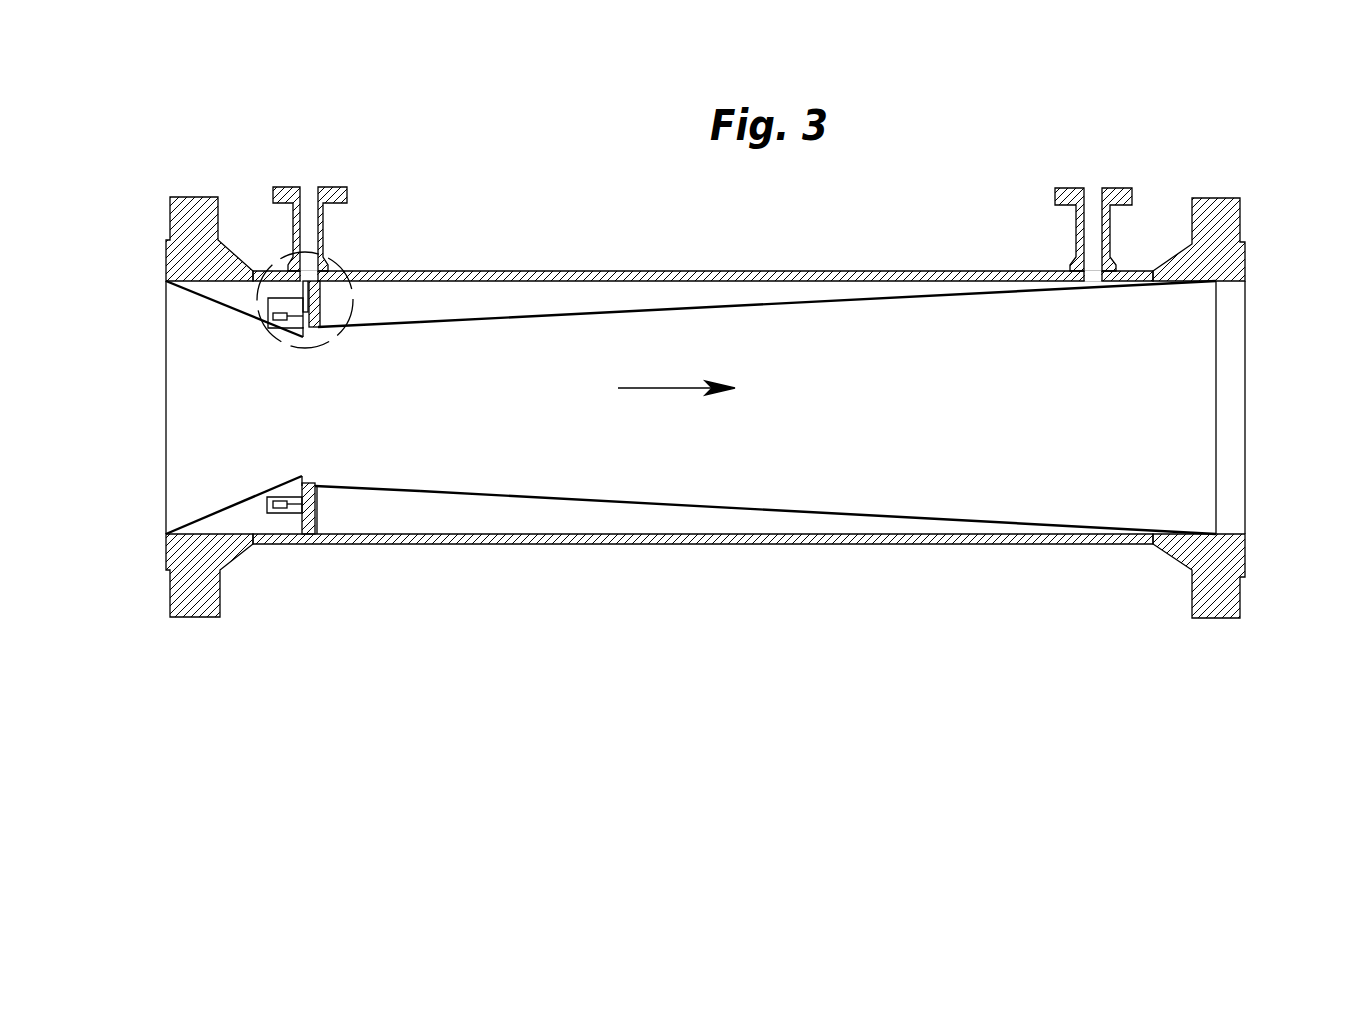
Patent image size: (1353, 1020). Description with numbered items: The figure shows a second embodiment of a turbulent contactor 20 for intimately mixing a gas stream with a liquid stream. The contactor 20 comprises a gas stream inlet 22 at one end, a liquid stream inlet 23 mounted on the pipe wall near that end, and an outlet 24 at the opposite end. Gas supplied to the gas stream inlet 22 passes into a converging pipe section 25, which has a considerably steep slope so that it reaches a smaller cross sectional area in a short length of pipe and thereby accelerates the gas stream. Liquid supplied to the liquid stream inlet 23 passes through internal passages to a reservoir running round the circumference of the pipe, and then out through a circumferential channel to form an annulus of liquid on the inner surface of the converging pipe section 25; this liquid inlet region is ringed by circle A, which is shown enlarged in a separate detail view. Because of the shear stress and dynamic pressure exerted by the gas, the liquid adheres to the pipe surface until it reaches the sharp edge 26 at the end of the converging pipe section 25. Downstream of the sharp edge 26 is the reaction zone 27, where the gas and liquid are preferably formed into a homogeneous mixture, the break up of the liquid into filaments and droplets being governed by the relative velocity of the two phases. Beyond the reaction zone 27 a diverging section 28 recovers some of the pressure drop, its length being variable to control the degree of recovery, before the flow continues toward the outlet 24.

The contactor 20 is at (744, 251).
The gas stream inlet 22 is at (166, 385).
The liquid stream inlet 23 is at (312, 186).
The outlet 24 is at (1246, 350).
The converging pipe section 25 is at (242, 505).
The sharp edge 26 is at (322, 481).
The reaction zone 27 is at (345, 450).
The diverging section 28 is at (565, 500).
The circle A is at (337, 258).